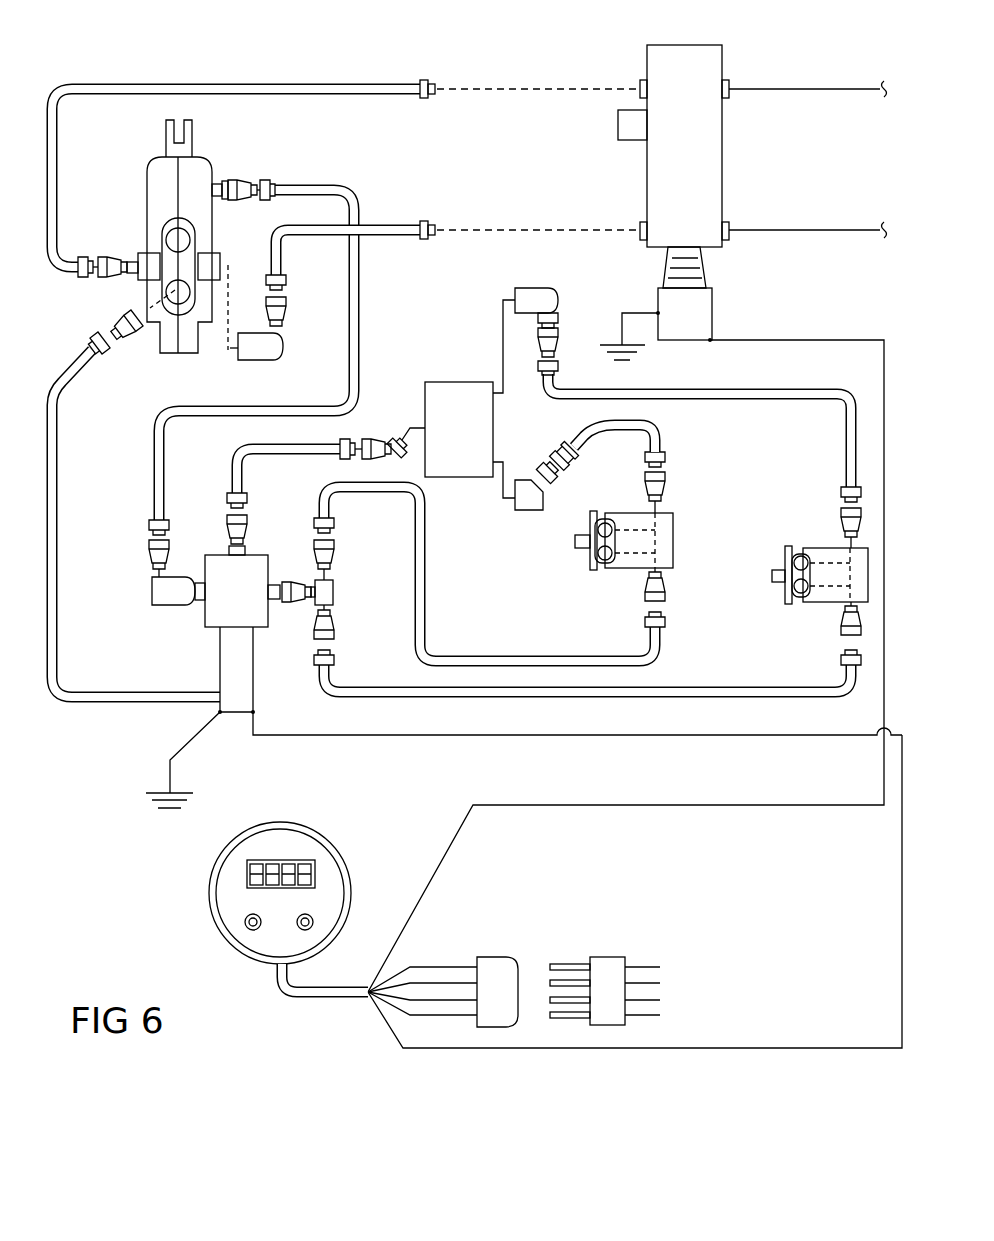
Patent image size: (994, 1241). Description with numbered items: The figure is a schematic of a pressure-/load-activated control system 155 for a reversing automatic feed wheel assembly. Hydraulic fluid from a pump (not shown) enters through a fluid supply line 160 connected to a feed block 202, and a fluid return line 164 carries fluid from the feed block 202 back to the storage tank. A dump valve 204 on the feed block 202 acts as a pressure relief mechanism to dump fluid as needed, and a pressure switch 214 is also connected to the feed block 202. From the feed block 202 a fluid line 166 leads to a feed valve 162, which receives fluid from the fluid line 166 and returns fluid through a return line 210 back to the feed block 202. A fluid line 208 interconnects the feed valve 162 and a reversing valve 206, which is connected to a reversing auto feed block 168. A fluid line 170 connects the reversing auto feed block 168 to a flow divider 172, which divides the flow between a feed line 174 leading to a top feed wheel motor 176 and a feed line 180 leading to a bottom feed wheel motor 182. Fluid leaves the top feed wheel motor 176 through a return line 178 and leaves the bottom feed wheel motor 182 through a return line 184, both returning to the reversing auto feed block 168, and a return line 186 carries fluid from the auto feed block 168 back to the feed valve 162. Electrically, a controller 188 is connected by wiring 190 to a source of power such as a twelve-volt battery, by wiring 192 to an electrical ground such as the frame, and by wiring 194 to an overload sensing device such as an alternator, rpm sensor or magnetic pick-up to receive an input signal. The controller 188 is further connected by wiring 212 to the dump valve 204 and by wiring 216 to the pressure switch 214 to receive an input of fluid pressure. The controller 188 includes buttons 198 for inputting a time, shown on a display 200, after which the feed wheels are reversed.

The control system 155 is at (183, 72).
The fluid supply line 160 is at (800, 230).
The feed valve 162 is at (211, 153).
The fluid return line 164 is at (790, 88).
The fluid line 166 is at (385, 226).
The reversing auto feed block 168 is at (208, 615).
The fluid line 170 is at (230, 462).
The flow divider 172 is at (470, 382).
The feed line 174 is at (610, 428).
The top feed wheel motor 176 is at (676, 513).
The return line 178 is at (528, 660).
The feed line 180 is at (766, 388).
The bottom feed wheel motor 182 is at (814, 548).
The return line 184 is at (745, 690).
The return line 186 is at (352, 358).
The controller 188 is at (277, 862).
The wiring 190 is at (463, 1000).
The wiring 192 is at (445, 982).
The wiring 194 is at (435, 965).
The buttons 198 is at (303, 930).
The display 200 is at (318, 880).
The feed block 202 is at (700, 60).
The dump valve 204 is at (618, 122).
The reversing valve 206 is at (577, 720).
The fluid line 208 is at (58, 458).
The return line 210 is at (283, 84).
The wiring 212 is at (430, 1016).
The pressure switch 214 is at (700, 313).
The wiring 216 is at (640, 806).